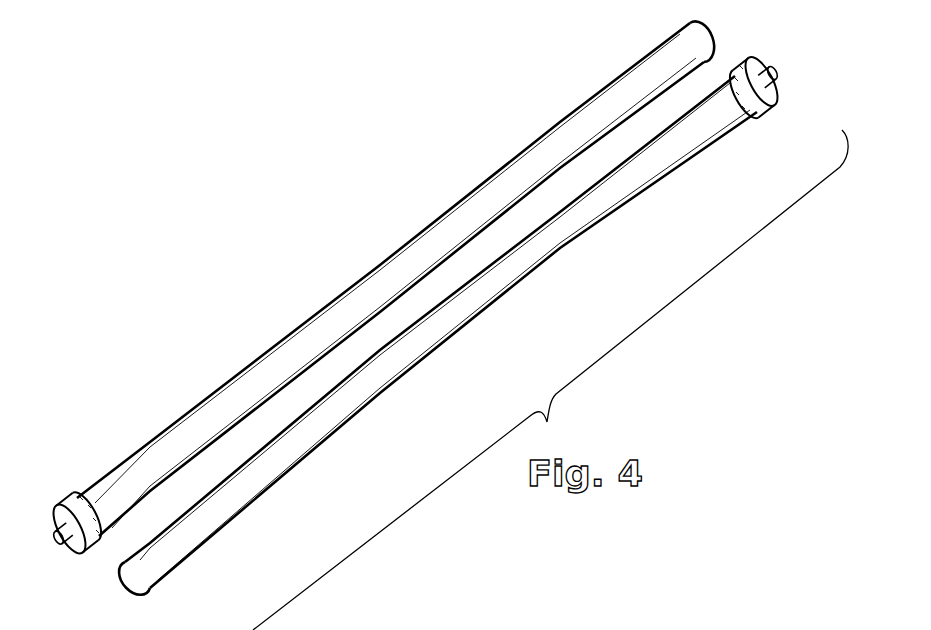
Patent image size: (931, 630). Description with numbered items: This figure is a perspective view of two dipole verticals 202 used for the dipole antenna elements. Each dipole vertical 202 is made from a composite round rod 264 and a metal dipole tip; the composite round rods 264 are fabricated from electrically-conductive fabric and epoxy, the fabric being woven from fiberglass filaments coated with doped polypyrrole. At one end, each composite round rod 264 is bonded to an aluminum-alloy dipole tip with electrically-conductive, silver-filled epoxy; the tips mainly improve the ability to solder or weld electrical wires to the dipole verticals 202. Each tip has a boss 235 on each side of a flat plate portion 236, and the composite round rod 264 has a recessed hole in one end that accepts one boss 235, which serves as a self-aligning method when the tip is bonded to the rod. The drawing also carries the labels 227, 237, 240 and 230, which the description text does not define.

The dipole vertical 202 is at (390, 236).
The composite round rod 264 is at (598, 92).
The tube end 227 is at (710, 38).
The end cap assembly 237 is at (406, 341).
The flat plate portion 236 is at (82, 540).
The boss 235 is at (60, 544).
The roller set bracket 240 is at (455, 629).
The roller assembly 230 is at (550, 626).